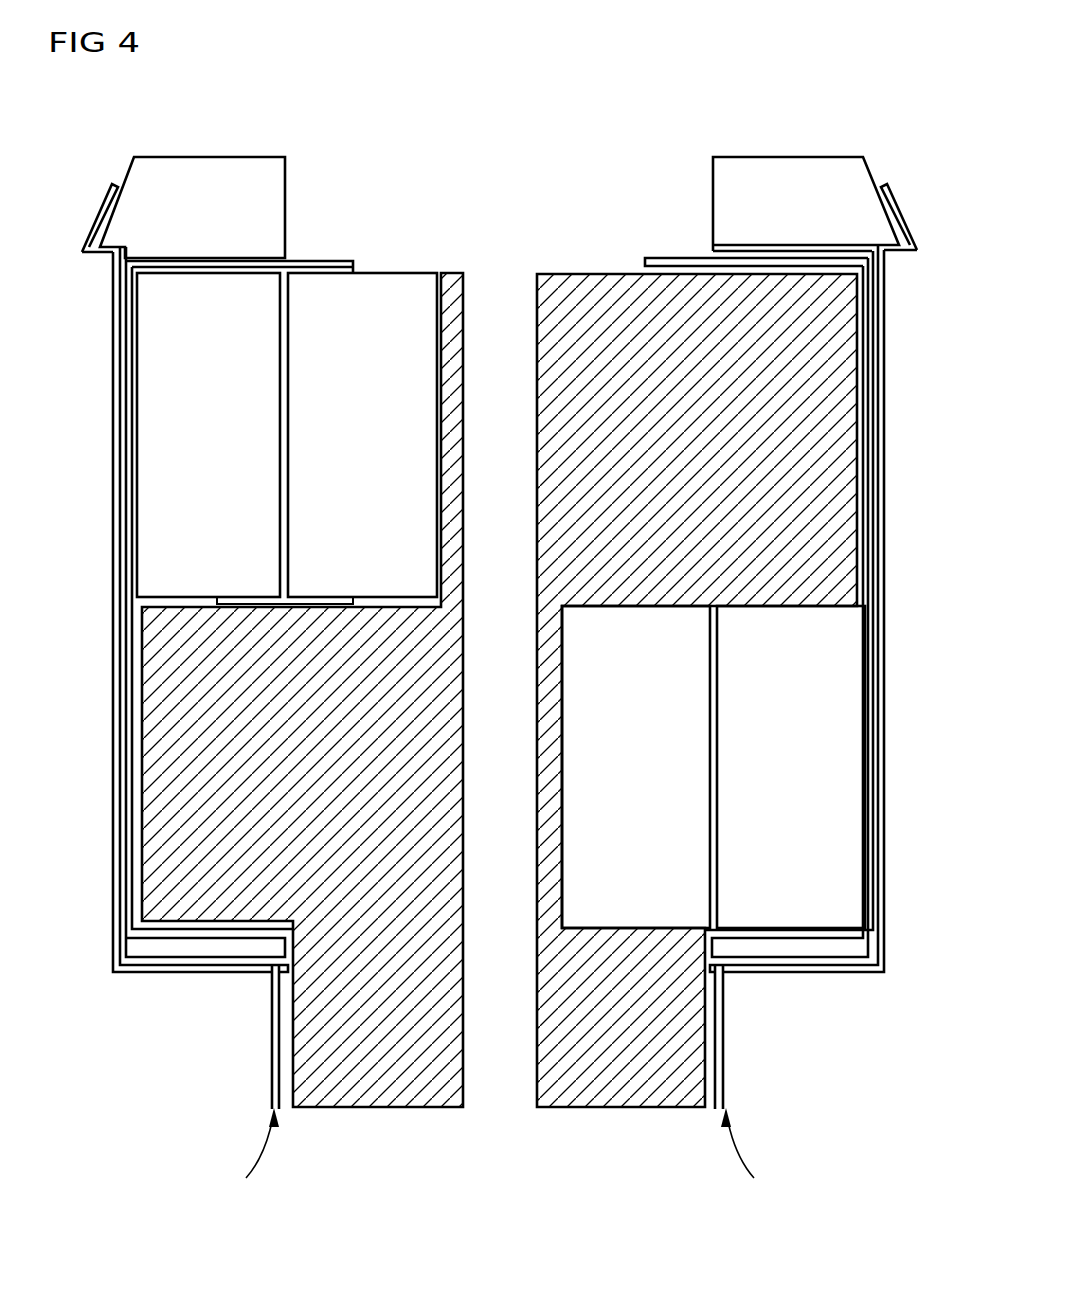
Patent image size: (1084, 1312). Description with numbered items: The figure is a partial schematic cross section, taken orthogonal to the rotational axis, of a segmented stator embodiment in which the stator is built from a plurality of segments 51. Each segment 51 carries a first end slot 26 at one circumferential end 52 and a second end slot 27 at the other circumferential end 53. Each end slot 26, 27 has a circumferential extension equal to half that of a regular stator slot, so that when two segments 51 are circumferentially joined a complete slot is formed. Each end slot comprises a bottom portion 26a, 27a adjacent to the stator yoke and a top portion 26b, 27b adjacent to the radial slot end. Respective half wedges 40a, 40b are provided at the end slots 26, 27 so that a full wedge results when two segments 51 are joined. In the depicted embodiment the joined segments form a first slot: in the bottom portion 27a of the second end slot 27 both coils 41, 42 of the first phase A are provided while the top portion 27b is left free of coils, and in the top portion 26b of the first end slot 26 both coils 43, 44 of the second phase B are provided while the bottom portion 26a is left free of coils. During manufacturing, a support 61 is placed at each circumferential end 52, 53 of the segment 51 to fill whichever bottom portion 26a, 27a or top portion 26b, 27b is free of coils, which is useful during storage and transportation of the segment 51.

The first end slot 26 is at (199, 609).
The bottom portion of first end slot 26a is at (126, 790).
The top portion of first end slot 26b is at (125, 418).
The second end slot 27 is at (760, 608).
The bottom portion of second end slot 27a is at (882, 760).
The top portion of second end slot 27b is at (877, 417).
The half wedge 40a is at (214, 190).
The half wedge 40b is at (763, 190).
The coil of first phase A 41 is at (605, 805).
The coil of first phase A 42 is at (812, 825).
The coil of second phase B 43 is at (172, 357).
The coil of second phase B 44 is at (378, 320).
The segment 51 is at (499, 1159).
The circumferential end 52 is at (272, 1048).
The circumferential end 53 is at (726, 1048).
The support 61 is at (362, 1100).